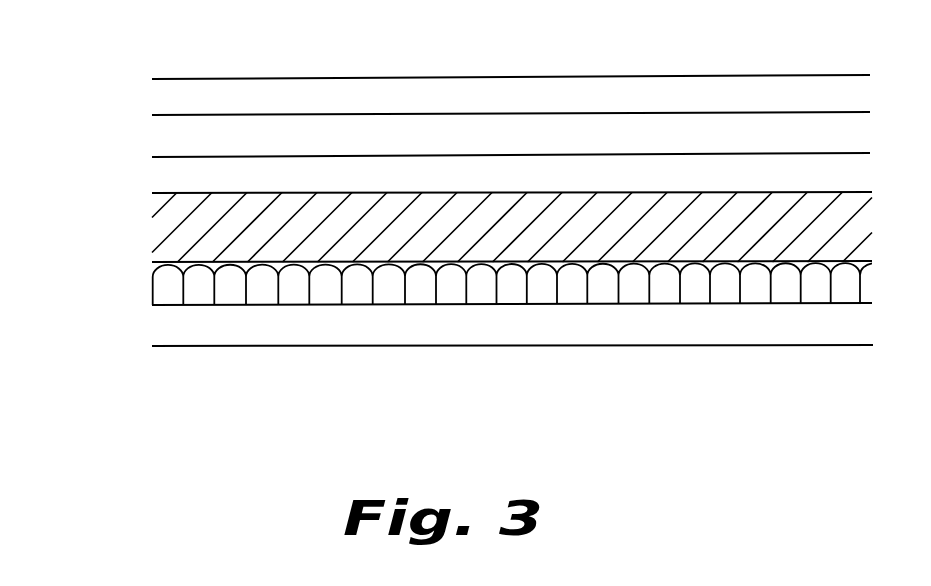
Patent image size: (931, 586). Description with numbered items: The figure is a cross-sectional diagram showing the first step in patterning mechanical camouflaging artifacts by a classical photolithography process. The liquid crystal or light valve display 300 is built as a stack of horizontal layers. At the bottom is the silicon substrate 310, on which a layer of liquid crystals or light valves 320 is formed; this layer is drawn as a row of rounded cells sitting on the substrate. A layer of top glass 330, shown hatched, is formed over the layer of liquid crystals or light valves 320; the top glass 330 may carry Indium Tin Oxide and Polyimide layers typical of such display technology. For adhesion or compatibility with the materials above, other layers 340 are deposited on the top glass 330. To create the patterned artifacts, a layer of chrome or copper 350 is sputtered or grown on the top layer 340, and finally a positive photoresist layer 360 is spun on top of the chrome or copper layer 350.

The liquid crystal or light valve display 300 is at (451, 258).
The silicon substrate 310 is at (157, 326).
The layer of liquid crystals or light valves 320 is at (150, 287).
The top glass 330 is at (152, 232).
The other layers 340 is at (152, 175).
The layer of chrome or copper 350 is at (152, 138).
The positive photoresist layer 360 is at (150, 97).